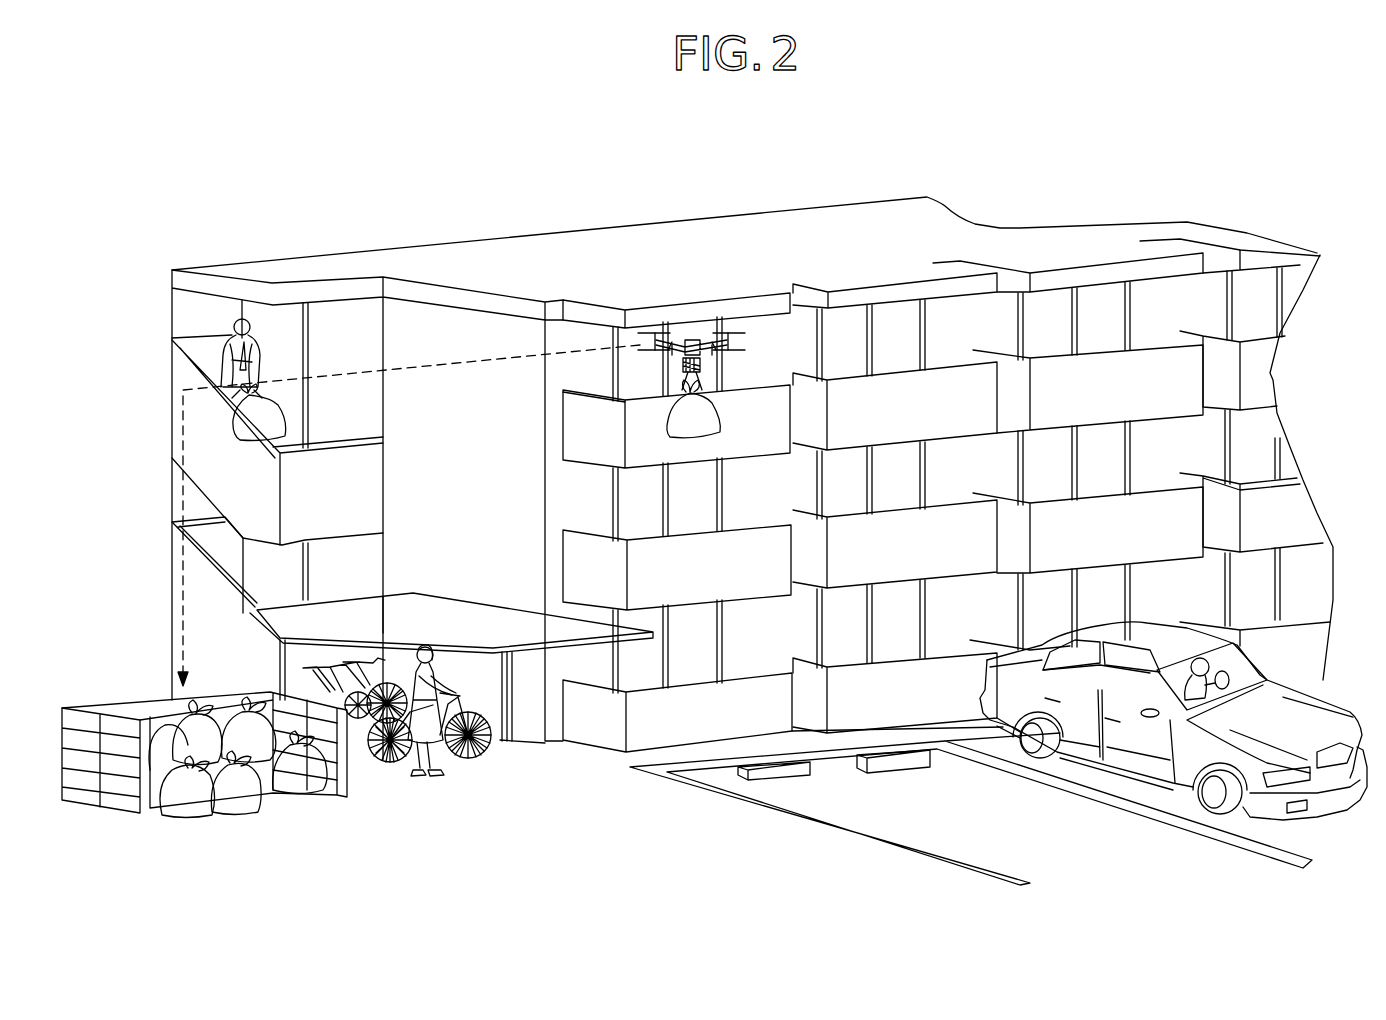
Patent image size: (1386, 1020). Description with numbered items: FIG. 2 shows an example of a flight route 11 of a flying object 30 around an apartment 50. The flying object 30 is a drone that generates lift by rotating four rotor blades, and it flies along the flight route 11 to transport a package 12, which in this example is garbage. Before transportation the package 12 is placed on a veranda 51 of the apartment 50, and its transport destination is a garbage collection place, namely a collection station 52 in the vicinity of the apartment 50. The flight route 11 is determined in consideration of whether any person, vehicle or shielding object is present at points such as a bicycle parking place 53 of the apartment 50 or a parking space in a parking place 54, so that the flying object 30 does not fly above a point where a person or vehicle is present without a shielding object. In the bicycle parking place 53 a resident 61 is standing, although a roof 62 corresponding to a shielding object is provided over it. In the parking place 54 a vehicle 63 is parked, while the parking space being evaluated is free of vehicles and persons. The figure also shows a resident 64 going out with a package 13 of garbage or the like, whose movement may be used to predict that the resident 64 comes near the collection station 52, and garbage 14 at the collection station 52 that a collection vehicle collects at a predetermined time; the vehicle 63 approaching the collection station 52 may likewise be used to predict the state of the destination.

The apartment 50 is at (980, 200).
The veranda 51 is at (737, 443).
The flight route 11 is at (452, 372).
The flying object 30 is at (693, 337).
The package 12 is at (708, 423).
The resident 64 is at (253, 341).
The package 13 is at (273, 413).
The roof 62 is at (448, 607).
The collection station 52 is at (342, 748).
The garbage 14 is at (263, 790).
The bicycle parking place 53 is at (493, 760).
The resident 61 is at (437, 783).
The parking place 54 is at (867, 817).
The vehicle 63 is at (1140, 773).